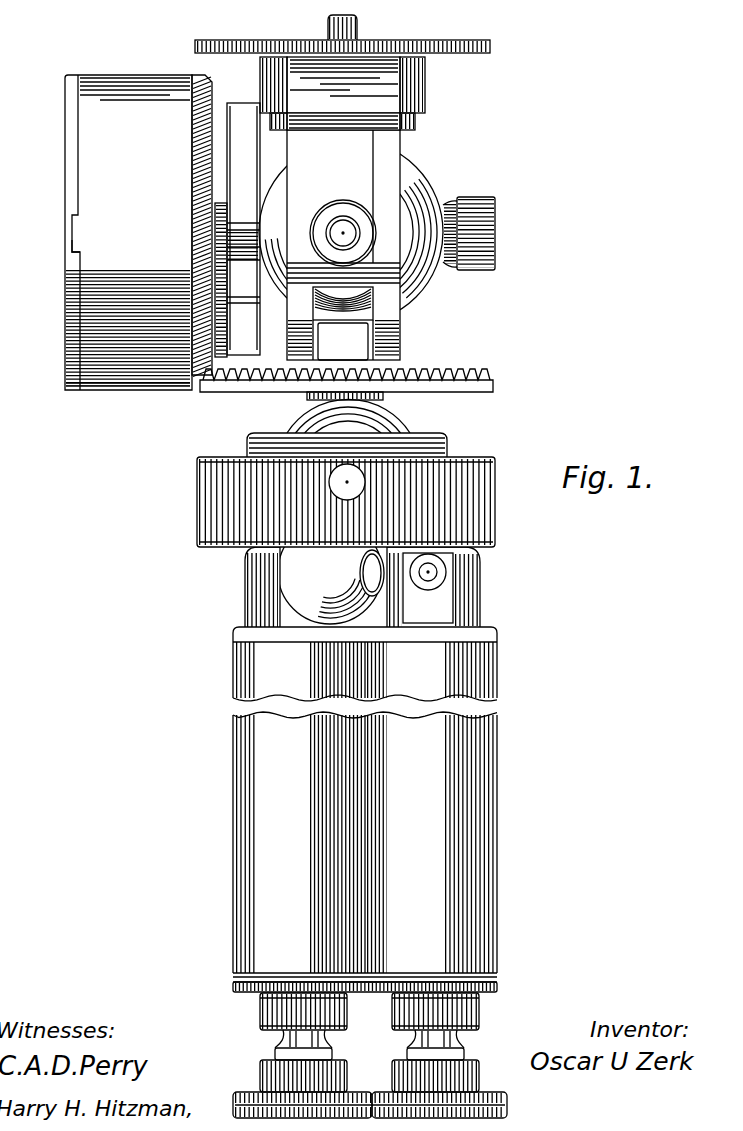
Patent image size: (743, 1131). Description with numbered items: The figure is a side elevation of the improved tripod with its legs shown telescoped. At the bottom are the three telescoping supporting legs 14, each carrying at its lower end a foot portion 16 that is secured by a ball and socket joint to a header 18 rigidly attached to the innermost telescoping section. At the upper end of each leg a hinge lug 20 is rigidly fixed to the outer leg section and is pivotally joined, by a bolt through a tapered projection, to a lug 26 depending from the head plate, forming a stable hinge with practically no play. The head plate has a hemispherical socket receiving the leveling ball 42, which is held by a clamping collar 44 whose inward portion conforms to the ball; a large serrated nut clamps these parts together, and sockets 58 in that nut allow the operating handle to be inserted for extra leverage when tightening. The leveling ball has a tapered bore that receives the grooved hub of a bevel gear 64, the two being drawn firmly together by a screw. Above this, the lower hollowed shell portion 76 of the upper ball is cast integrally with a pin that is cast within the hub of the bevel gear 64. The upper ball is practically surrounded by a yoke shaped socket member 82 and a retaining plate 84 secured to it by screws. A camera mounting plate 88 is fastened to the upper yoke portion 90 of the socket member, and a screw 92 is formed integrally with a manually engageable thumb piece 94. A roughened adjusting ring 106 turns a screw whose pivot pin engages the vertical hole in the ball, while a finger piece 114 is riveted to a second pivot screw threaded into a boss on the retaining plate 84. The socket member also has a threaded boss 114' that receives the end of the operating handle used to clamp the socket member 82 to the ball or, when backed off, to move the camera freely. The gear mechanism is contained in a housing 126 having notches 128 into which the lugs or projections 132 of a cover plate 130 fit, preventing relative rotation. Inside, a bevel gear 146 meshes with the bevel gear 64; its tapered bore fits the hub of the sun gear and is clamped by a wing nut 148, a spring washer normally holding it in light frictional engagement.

The telescoping supporting legs 14 is at (266, 878).
The foot portion 16 is at (234, 1102).
The header 18 is at (262, 1012).
The hinge lug 20 is at (252, 600).
The lug 26 is at (330, 572).
The leveling ball 42 is at (290, 423).
The clamping collar 44 is at (432, 457).
The sockets 58 is at (338, 470).
The bevel gear 64 is at (445, 386).
The lower hollowed shell portion 76 is at (388, 165).
The yoke shaped socket member 82 is at (322, 216).
The retaining plate 84 is at (390, 276).
The camera mounting plate 88 is at (447, 44).
The upper yoke portion 90 is at (298, 88).
The screw 92 is at (357, 28).
The thumb piece 94 is at (422, 90).
The adjusting ring 106 is at (416, 122).
The finger piece 114 is at (483, 221).
The boss 114' is at (340, 212).
The housing 126 is at (148, 384).
The notches 128 is at (78, 235).
The cover plate 130 is at (66, 328).
The lugs or projections 132 is at (76, 215).
The bevel gear 146 is at (193, 165).
The wing nut 148 is at (240, 116).